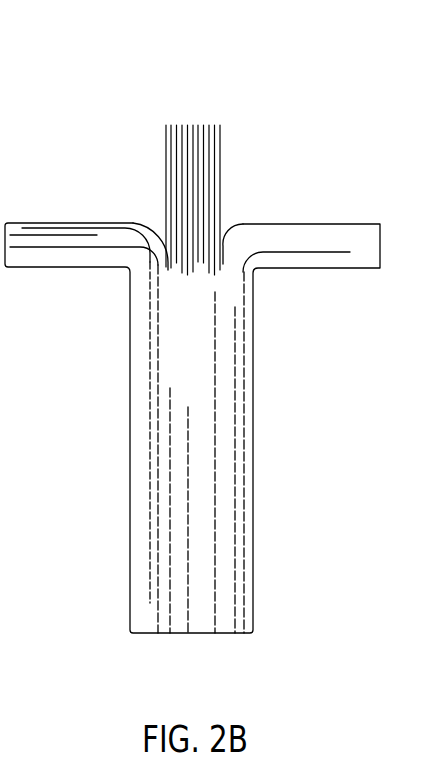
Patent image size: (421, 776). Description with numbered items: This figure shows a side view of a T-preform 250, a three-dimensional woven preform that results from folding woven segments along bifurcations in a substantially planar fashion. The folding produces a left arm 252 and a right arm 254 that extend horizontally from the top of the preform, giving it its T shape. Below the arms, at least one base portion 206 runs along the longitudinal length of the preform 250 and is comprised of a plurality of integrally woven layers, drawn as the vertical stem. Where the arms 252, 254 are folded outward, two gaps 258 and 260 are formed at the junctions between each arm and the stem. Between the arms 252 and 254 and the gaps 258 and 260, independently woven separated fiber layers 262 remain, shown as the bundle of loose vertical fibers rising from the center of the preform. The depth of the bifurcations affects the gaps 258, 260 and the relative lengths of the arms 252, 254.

The T-preform 250 is at (308, 525).
The base portion 206 is at (253, 437).
The left arm 252 is at (56, 223).
The right arm 254 is at (317, 224).
The gap 258 is at (167, 264).
The gap 260 is at (225, 225).
The independently woven separated fiber layers 262 is at (192, 122).